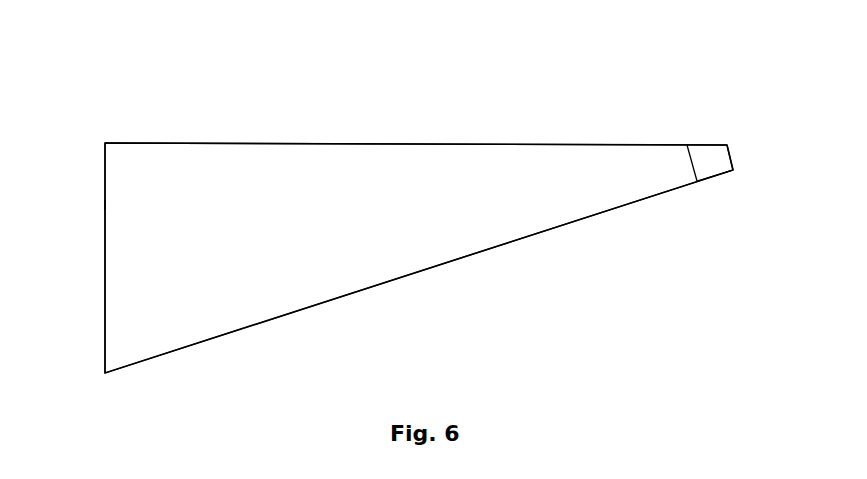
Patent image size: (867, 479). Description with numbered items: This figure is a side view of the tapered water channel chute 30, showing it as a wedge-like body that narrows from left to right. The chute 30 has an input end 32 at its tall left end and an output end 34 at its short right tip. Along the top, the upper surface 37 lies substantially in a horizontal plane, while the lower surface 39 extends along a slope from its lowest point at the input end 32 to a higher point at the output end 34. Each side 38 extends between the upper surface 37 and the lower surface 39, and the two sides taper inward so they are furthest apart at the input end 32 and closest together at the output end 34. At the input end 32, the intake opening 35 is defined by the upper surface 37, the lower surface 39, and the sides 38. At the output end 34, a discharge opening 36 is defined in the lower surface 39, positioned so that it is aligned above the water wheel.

The tapered water channel chute 30 is at (252, 100).
The input end 32 is at (103, 185).
The output end 34 is at (730, 152).
The intake opening 35 is at (94, 273).
The discharge opening 36 is at (720, 186).
The upper surface 37 is at (445, 143).
The side 38 is at (360, 210).
The lower surface 39 is at (448, 263).